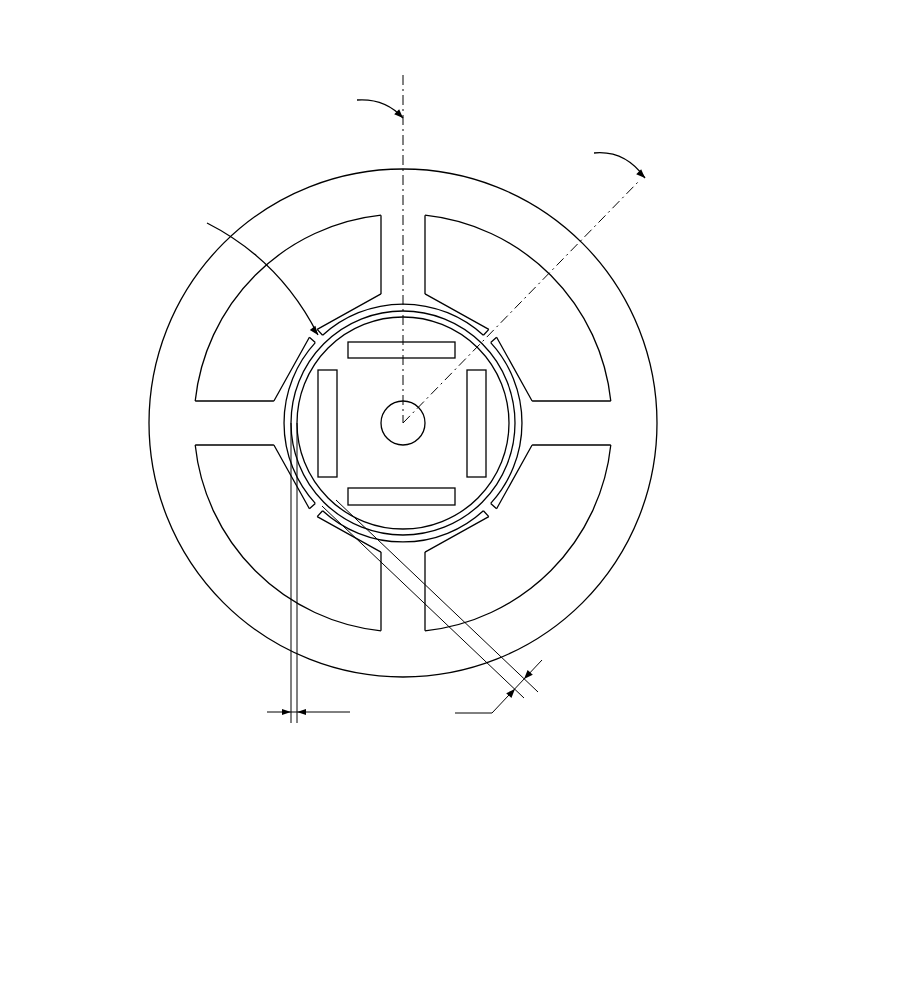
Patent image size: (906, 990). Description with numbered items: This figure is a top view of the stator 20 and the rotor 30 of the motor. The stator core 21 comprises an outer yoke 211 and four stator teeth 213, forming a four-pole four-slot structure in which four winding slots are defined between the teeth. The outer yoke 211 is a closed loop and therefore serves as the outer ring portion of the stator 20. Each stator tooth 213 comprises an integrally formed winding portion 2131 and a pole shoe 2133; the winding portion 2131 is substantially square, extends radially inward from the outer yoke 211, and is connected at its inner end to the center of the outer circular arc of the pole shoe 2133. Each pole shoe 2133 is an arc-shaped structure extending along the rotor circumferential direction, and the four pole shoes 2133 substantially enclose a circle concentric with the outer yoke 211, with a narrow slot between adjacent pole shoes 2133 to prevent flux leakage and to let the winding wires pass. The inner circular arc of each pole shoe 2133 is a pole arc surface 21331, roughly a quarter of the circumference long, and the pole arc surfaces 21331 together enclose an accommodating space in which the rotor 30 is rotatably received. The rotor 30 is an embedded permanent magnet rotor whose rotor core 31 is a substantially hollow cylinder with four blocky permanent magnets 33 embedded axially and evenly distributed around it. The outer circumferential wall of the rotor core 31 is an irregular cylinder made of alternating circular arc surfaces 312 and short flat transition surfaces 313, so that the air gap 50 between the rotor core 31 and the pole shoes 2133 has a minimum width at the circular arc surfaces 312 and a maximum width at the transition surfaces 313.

The stator 20 is at (410, 40).
The stator core 21 is at (480, 459).
The outer yoke 211 is at (565, 585).
The stator teeth 213 is at (480, 439).
The winding portion 2131 is at (572, 422).
The pole shoe 2133 is at (507, 477).
The pole arc surface 21331 is at (497, 352).
The air gap 50 is at (422, 313).
The rotor 30 is at (276, 418).
The rotor core 31 is at (295, 418).
The circular arc surfaces 312 is at (300, 385).
The transition surfaces 313 is at (310, 338).
The permanent magnets 33 is at (327, 422).